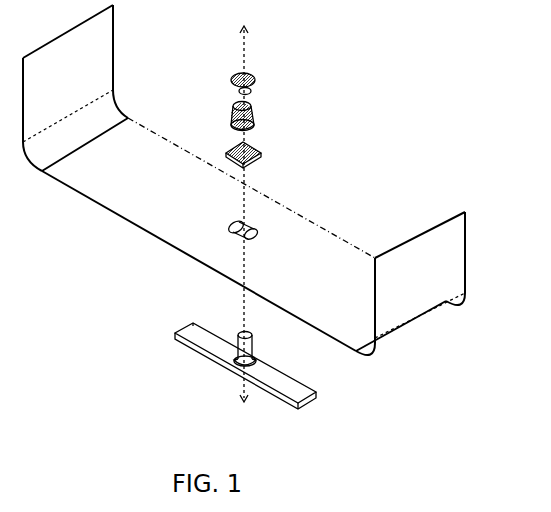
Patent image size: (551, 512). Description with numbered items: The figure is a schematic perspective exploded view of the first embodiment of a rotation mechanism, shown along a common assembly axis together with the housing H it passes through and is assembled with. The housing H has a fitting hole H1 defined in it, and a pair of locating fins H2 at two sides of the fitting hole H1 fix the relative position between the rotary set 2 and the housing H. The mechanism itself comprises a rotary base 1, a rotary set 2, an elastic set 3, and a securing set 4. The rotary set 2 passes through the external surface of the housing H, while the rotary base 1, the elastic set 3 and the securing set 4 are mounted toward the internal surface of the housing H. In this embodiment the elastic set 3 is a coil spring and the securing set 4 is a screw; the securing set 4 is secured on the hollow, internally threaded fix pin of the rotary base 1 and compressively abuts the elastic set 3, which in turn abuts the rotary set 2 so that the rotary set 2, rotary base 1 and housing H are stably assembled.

The rotary base 1 is at (173, 333).
The rotary set 2 is at (266, 152).
The elastic set 3 is at (256, 124).
The securing set 4 is at (257, 80).
The housing H is at (479, 221).
The fitting hole H1 is at (236, 231).
The locating fins H2 is at (255, 236).